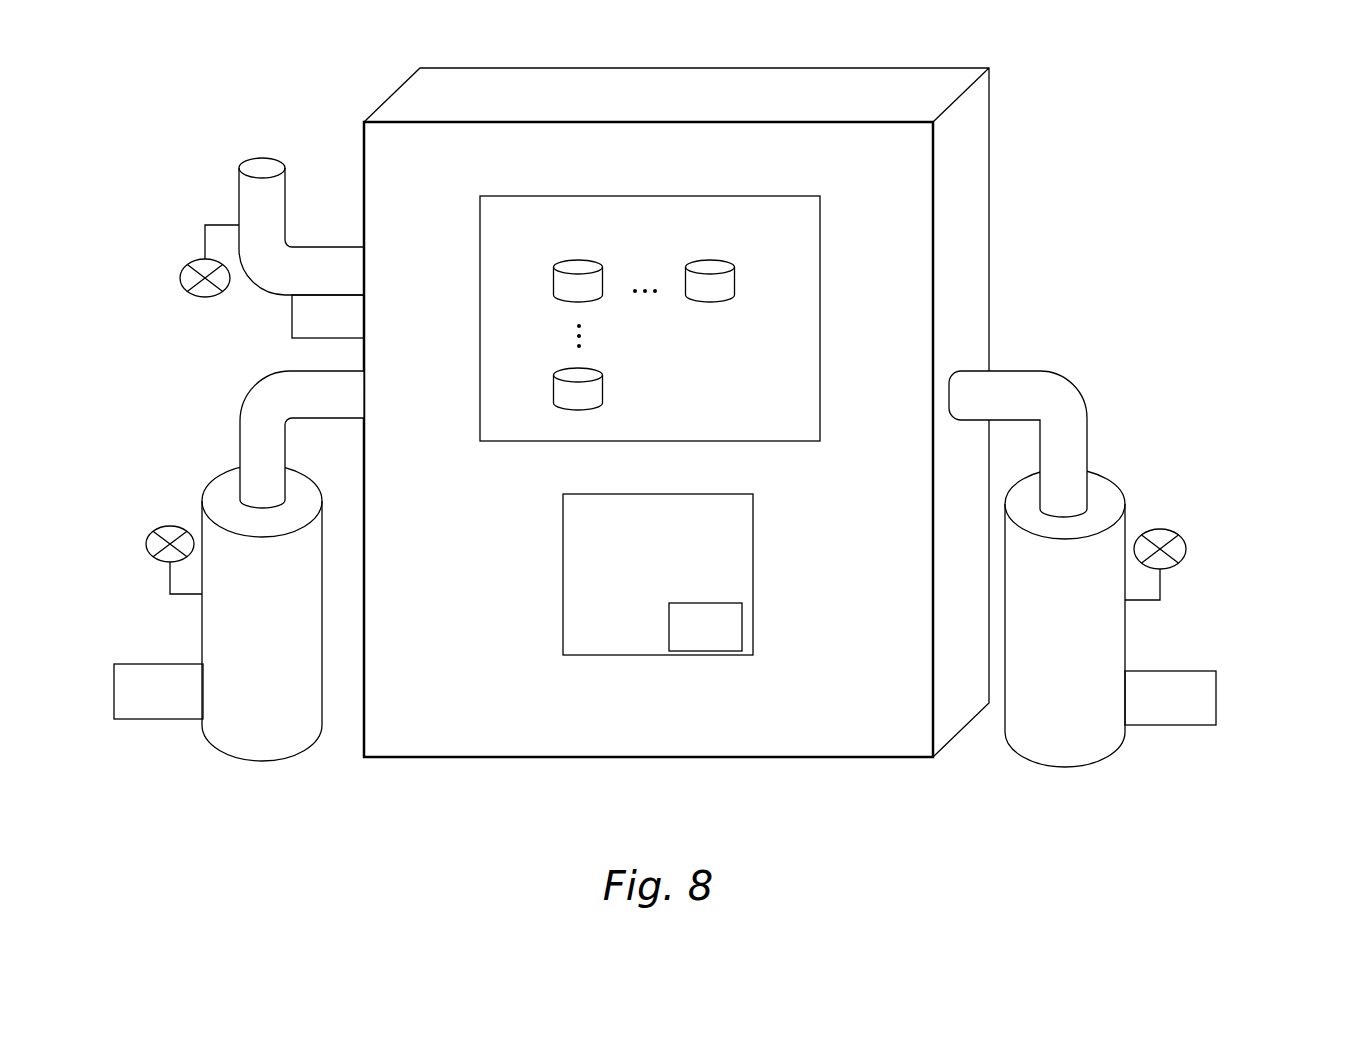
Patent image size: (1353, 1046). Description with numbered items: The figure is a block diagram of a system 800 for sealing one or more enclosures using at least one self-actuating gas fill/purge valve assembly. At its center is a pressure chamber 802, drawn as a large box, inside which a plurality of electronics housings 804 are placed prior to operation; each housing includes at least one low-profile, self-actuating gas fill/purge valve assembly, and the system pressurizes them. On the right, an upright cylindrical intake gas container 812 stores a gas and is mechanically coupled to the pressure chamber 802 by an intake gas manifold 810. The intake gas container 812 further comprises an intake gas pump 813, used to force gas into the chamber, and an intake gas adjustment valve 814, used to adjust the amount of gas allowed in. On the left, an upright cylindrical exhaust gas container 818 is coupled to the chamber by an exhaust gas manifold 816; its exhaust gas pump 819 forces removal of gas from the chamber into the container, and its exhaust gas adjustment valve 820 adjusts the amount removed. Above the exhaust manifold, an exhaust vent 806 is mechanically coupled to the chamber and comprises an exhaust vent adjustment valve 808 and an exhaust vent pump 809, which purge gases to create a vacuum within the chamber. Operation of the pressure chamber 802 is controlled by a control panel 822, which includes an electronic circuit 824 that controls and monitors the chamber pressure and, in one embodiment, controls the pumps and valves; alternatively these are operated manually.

The system for sealing one or more enclosures 800 is at (1230, 103).
The pressure chamber 802 is at (989, 222).
The electronics housings 804 is at (780, 318).
The exhaust vent 806 is at (265, 158).
The exhaust vent adjustment valve 808 is at (183, 268).
The exhaust vent pump 809 is at (308, 331).
The intake gas manifold 810 is at (1072, 380).
The intake gas container 812 is at (1044, 714).
The intake gas pump 813 is at (1146, 714).
The intake gas adjustment valve 814 is at (1190, 541).
The exhaust gas manifold 816 is at (252, 386).
The exhaust gas container 818 is at (242, 706).
The exhaust gas pump 819 is at (139, 706).
The exhaust gas adjustment valve 820 is at (148, 536).
The control panel 822 is at (637, 596).
The electronic circuit 824 is at (686, 642).